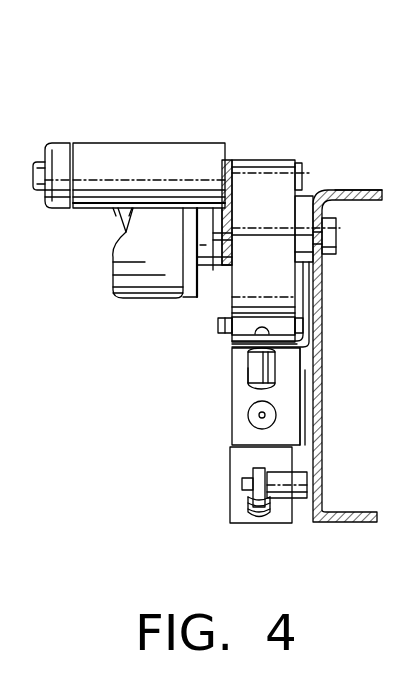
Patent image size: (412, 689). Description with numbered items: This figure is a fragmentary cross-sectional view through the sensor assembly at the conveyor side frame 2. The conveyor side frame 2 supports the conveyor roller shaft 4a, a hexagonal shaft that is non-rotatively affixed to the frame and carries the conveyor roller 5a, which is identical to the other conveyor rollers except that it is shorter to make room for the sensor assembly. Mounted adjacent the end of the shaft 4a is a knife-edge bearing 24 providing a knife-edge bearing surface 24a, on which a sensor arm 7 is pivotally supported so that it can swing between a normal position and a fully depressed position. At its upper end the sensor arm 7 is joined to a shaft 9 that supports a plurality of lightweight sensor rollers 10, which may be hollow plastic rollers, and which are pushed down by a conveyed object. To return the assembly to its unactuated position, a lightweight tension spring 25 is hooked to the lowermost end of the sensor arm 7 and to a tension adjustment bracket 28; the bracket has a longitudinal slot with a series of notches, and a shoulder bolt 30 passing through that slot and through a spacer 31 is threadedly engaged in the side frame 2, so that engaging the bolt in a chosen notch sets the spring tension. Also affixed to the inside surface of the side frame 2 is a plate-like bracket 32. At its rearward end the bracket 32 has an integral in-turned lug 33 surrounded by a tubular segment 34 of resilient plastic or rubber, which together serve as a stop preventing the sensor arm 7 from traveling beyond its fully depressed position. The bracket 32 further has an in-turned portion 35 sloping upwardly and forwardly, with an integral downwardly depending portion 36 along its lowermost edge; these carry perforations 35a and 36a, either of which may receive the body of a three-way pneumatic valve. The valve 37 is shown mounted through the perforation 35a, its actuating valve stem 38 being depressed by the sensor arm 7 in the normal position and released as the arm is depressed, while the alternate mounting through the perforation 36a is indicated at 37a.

The conveyor side frame 2 is at (358, 527).
The conveyor roller shaft 4a is at (338, 237).
The conveyor roller 5a is at (135, 288).
The sensor arm 7 is at (262, 178).
The shaft 9 is at (302, 172).
The sensor roller 10 is at (60, 150).
The knife-edge bearing 24 is at (300, 210).
The knife-edge bearing surface 24a is at (308, 192).
The tension spring 25 is at (258, 517).
The tension adjustment bracket 28 is at (253, 473).
The shoulder bolt 30 is at (242, 483).
The spacer 31 is at (283, 482).
The plate-like bracket 32 is at (307, 283).
The in-turned lug 33 is at (218, 325).
The tubular segment 34 is at (230, 338).
The in-turned portion 35 is at (237, 350).
The perforation 35a is at (243, 355).
The downwardly depending portion 36 is at (285, 437).
The perforation 36a is at (262, 418).
The three-way pneumatic valve 37 is at (245, 375).
The three-way pneumatic valve 37a is at (258, 418).
The actuating valve stem 38 is at (278, 333).